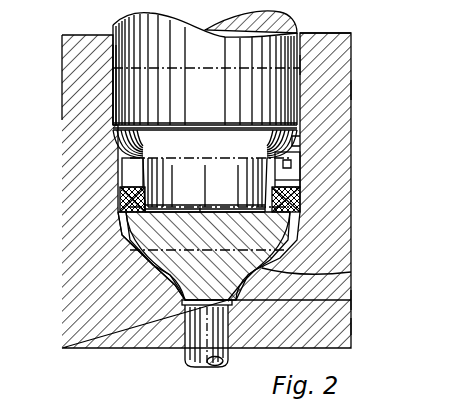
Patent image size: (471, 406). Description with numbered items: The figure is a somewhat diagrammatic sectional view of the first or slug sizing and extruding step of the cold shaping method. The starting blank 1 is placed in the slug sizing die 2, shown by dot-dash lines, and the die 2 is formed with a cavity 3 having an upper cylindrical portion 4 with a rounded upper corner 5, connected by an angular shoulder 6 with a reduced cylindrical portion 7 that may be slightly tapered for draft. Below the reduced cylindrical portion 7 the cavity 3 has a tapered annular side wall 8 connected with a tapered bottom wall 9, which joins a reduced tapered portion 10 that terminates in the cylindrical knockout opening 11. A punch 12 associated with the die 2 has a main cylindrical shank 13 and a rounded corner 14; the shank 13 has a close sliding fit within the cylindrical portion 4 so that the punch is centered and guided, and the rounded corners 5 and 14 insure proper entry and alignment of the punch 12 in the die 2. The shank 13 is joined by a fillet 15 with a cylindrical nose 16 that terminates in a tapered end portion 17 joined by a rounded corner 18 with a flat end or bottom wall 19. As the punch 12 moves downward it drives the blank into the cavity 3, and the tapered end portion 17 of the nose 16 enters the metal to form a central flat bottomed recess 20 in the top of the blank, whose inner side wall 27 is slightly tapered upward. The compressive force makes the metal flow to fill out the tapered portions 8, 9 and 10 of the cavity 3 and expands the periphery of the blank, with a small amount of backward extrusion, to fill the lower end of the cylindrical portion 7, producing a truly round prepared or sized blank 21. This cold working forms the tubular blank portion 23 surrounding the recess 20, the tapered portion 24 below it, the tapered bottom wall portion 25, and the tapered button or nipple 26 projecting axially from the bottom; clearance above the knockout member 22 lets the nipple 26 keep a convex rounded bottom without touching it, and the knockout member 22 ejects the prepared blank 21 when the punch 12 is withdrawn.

The starting blank 1 is at (351, 160).
The slug sizing die 2 is at (91, 52).
The cavity 3 is at (351, 90).
The upper cylindrical portion 4 is at (351, 68).
The rounded upper corner 5 is at (302, 36).
The angular shoulder 6 is at (300, 138).
The reduced cylindrical portion 7 is at (298, 157).
The tapered annular side wall 8 is at (351, 233).
The tapered bottom wall 9 is at (351, 272).
The reduced tapered portion 10 is at (351, 298).
The cylindrical knockout opening 11 is at (351, 325).
The punch 12 is at (298, 26).
The main cylindrical shank 13 is at (118, 88).
The rounded corner 14 is at (120, 113).
The fillet 15 is at (120, 146).
The cylindrical nose 16 is at (140, 170).
The tapered end portion 17 is at (118, 217).
The rounded corner 18 is at (143, 205).
The flat end or bottom wall 19 is at (200, 212).
The central flat bottomed recess 20 is at (143, 255).
The prepared or sized blank 21 is at (246, 235).
The knockout member 22 is at (200, 352).
The tubular blank portion 23 is at (351, 194).
The tapered portion 24 is at (150, 271).
The tapered bottom wall portion 25 is at (198, 284).
The tapered button or nipple 26 is at (156, 274).
The inner side wall 27 is at (296, 186).